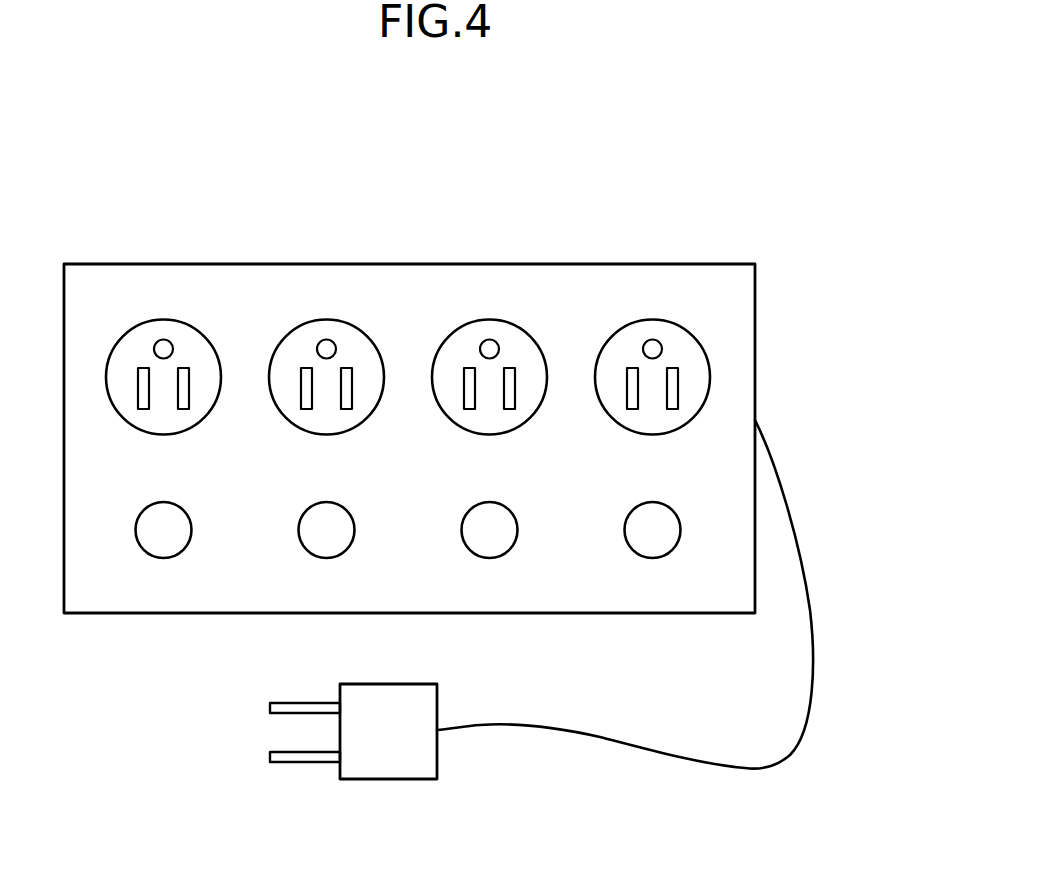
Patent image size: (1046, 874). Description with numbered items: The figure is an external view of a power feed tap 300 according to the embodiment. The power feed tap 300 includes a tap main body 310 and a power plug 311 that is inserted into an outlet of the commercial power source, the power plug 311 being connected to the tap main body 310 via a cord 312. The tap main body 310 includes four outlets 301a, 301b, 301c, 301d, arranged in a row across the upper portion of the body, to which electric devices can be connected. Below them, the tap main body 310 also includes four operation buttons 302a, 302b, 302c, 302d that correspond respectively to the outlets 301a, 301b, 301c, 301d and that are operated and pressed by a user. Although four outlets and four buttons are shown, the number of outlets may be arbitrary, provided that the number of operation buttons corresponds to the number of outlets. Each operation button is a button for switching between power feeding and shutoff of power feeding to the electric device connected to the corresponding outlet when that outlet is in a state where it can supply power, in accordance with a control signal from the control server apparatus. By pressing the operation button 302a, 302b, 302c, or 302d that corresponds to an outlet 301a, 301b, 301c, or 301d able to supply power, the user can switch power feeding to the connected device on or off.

The power feed tap 300 is at (716, 138).
The tap main body 310 is at (675, 264).
The outlet 301a is at (188, 325).
The outlet 301b is at (350, 325).
The outlet 301c is at (514, 325).
The outlet 301d is at (676, 325).
The operation button 302a is at (182, 508).
The operation button 302b is at (344, 508).
The operation button 302c is at (508, 508).
The operation button 302d is at (670, 508).
The power plug 311 is at (390, 779).
The cord 312 is at (583, 737).